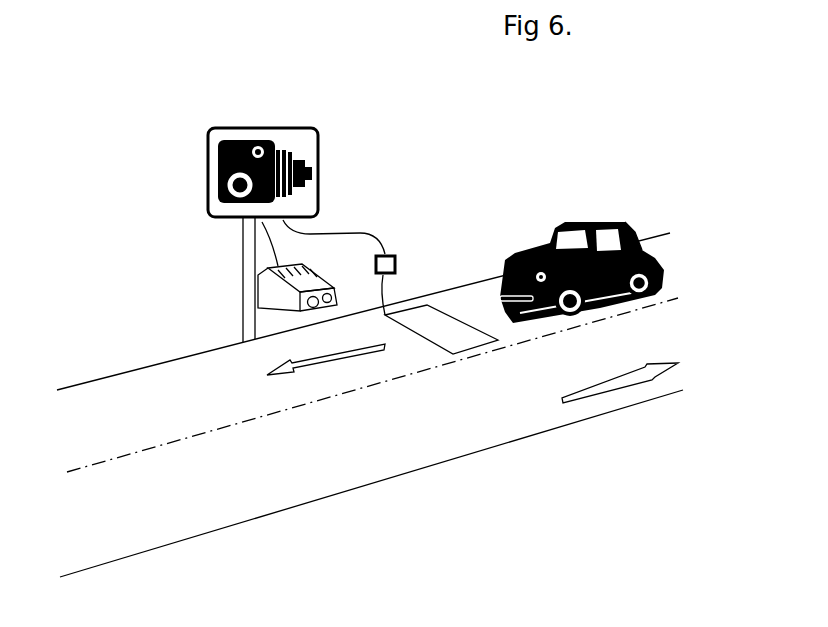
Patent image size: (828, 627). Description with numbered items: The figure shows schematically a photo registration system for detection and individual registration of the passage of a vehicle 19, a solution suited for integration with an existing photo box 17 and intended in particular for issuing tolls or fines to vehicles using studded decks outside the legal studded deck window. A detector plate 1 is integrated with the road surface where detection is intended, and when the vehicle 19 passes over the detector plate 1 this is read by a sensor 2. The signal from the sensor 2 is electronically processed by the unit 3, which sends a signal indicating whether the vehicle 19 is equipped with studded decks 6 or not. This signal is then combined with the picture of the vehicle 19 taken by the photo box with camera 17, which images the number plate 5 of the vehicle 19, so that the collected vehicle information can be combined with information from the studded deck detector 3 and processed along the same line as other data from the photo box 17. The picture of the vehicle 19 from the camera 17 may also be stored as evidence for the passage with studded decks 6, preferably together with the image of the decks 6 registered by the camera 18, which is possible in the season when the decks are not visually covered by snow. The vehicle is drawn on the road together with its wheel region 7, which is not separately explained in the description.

The detector plate 1 is at (430, 310).
The sensor 2 is at (407, 308).
The unit 3 is at (396, 254).
The number plate 5 is at (516, 326).
The studded decks 6 is at (568, 323).
The vehicle 7 is at (582, 272).
The photo box with camera 17 is at (270, 127).
The camera 18 is at (162, 400).
The vehicle 19 is at (615, 215).